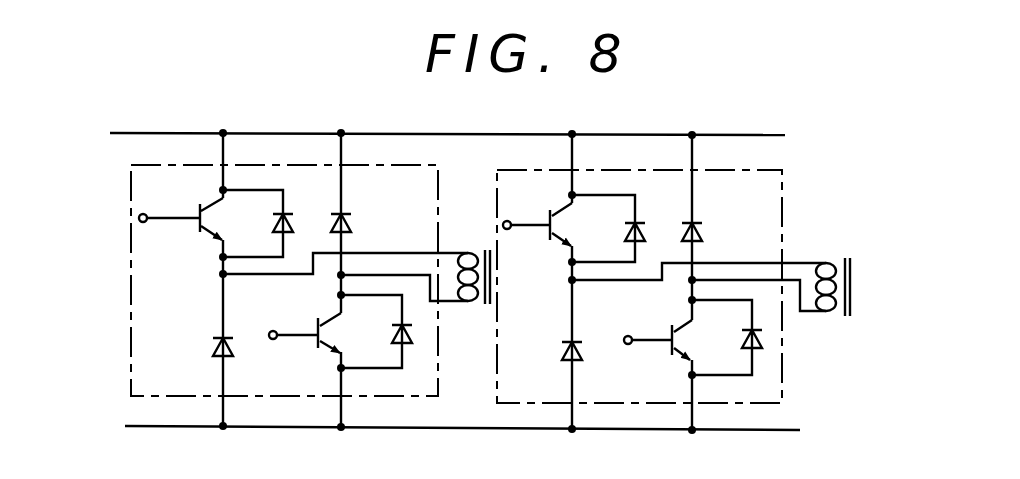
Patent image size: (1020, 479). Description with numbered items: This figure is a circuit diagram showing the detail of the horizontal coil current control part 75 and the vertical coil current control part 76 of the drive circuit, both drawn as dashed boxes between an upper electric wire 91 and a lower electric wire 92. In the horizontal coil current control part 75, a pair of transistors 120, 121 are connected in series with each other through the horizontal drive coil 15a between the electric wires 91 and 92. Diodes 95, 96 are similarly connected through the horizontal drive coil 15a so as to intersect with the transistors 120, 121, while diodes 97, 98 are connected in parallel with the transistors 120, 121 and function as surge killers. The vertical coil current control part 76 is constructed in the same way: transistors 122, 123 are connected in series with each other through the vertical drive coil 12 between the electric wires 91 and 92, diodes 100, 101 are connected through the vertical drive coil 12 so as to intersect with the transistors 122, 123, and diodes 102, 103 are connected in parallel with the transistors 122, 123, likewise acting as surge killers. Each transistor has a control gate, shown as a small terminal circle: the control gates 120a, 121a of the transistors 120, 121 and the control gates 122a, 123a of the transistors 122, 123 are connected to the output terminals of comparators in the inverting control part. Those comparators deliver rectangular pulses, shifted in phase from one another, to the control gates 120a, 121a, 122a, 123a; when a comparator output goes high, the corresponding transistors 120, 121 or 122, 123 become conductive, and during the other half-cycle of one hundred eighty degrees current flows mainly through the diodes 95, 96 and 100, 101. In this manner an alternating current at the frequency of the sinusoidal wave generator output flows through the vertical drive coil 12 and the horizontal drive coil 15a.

The electric wire 91 is at (258, 133).
The electric wire 92 is at (257, 428).
The horizontal coil current control part 75 is at (446, 200).
The vertical coil current control part 76 is at (791, 208).
The transistor 121 is at (197, 206).
The control gate 121a is at (144, 223).
The diode 98 is at (285, 212).
The diode 96 is at (344, 213).
The diode 95 is at (220, 339).
The transistor 120 is at (316, 322).
The control gate 120a is at (273, 340).
The diode 97 is at (398, 326).
The horizontal drive coil 15a is at (462, 301).
The transistor 123 is at (551, 213).
The control gate 123a is at (508, 230).
The diode 103 is at (638, 221).
The diode 101 is at (697, 221).
The diode 100 is at (570, 336).
The transistor 122 is at (668, 331).
The control gate 122a is at (628, 345).
The diode 102 is at (750, 331).
The vertical drive coil 12 is at (830, 315).